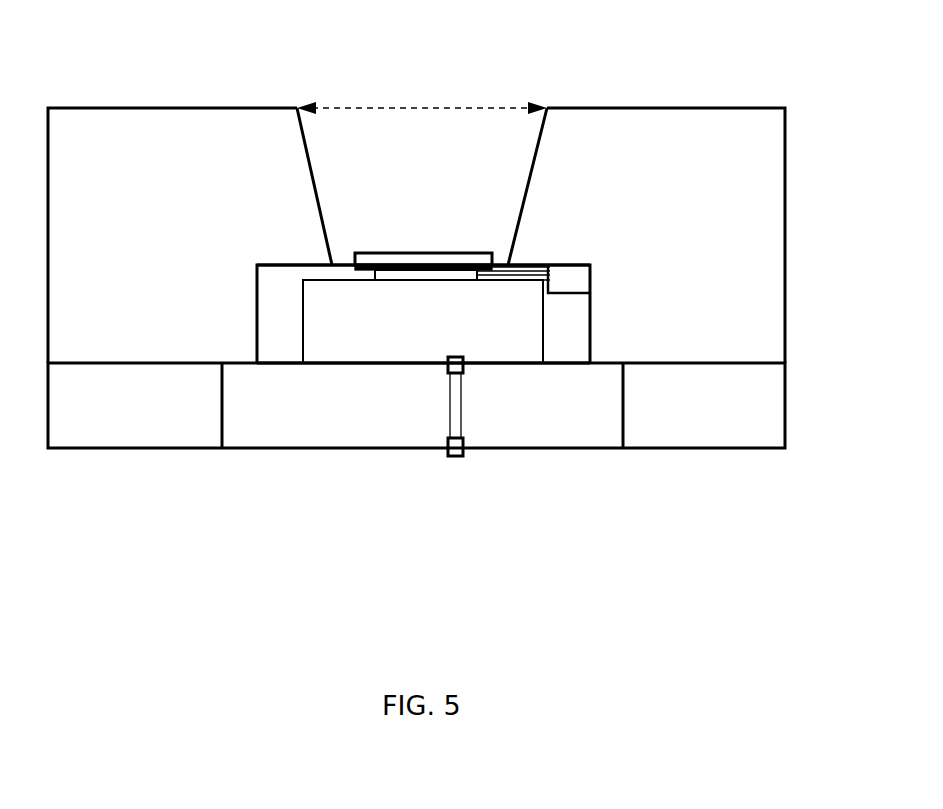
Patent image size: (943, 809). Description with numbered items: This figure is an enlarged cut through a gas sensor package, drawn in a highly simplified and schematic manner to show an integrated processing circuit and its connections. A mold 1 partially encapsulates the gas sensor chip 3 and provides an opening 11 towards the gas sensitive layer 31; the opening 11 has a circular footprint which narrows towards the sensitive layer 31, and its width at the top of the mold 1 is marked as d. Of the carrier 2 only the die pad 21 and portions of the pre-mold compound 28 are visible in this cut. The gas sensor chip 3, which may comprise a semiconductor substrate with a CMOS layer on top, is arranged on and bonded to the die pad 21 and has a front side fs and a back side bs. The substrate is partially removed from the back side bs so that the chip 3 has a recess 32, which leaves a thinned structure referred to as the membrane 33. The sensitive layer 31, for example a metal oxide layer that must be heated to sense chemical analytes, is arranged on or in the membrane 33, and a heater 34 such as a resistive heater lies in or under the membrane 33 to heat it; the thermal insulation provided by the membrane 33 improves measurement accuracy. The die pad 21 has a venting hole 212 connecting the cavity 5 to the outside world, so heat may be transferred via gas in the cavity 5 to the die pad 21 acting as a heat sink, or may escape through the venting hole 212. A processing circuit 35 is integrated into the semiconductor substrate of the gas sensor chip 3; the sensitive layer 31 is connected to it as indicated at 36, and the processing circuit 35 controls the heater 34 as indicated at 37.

The mold 1 is at (670, 168).
The opening 11 is at (313, 168).
The opening width d is at (422, 92).
The carrier 2 is at (800, 417).
The die pad 21 is at (257, 437).
The venting hole 212 is at (466, 455).
The pre-mold compound 28 is at (142, 432).
The gas sensor chip 3 is at (593, 348).
The front side fs is at (292, 256).
The back side bs is at (278, 378).
The cavity 5 is at (460, 332).
The sensitive layer 31 is at (402, 252).
The recess 32 is at (305, 300).
The membrane 33 is at (365, 282).
The heater 34 is at (460, 282).
The processing circuit 35 is at (580, 278).
The connection of sensitive layer to processing circuit 36 is at (533, 270).
The connection of processing circuit to heater 37 is at (492, 275).